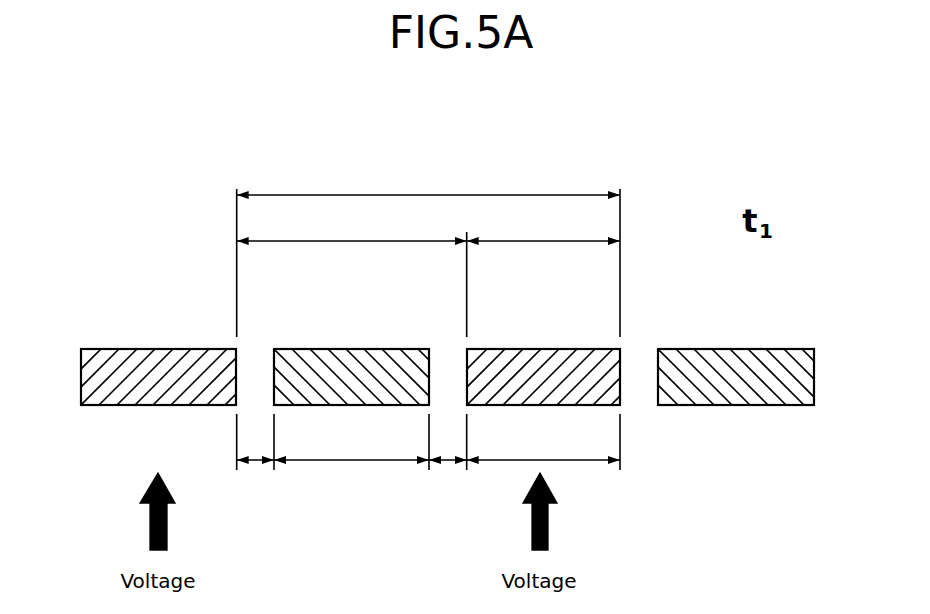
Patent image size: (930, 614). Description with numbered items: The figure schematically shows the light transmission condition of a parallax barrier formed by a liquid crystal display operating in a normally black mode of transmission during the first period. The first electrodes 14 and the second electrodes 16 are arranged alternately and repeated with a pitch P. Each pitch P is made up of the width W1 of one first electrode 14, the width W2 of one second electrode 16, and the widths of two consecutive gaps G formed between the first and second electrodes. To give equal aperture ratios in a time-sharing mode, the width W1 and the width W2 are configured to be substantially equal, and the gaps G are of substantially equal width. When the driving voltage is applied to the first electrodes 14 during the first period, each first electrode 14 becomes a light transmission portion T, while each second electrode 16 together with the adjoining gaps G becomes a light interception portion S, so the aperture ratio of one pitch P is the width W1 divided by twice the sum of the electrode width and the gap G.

The first electrode 14 is at (148, 356).
The second electrode 16 is at (356, 356).
The pitch P is at (428, 179).
The light interception portion S is at (352, 225).
The light transmission portion T is at (543, 225).
The gap G is at (352, 444).
The width of first electrode W1 is at (543, 444).
The width of second electrode W2 is at (351, 444).